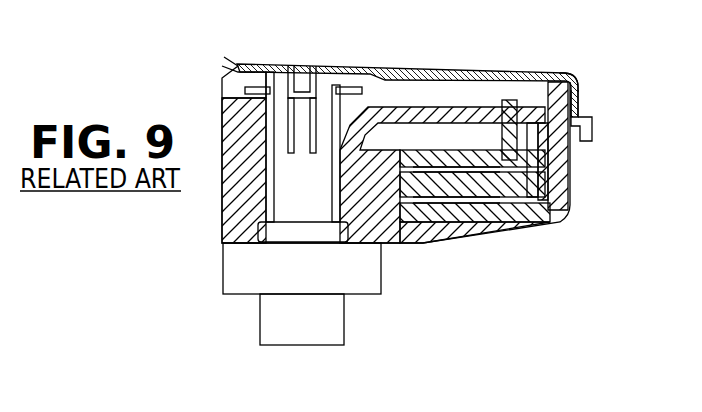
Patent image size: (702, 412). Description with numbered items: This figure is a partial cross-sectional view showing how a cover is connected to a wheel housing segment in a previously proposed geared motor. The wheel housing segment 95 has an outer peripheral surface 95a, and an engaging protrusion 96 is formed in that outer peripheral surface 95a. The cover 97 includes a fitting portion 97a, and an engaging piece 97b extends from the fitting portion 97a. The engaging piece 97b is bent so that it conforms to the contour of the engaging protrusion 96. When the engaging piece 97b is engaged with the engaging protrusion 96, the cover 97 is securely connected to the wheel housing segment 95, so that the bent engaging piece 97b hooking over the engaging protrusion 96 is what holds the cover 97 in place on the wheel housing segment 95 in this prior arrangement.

The wheel housing segment 95 is at (565, 187).
The outer peripheral surface 95a is at (570, 160).
The engaging protrusion 96 is at (594, 128).
The cover 97 is at (391, 70).
The fitting portion 97a is at (587, 80).
The engaging piece 97b is at (590, 103).